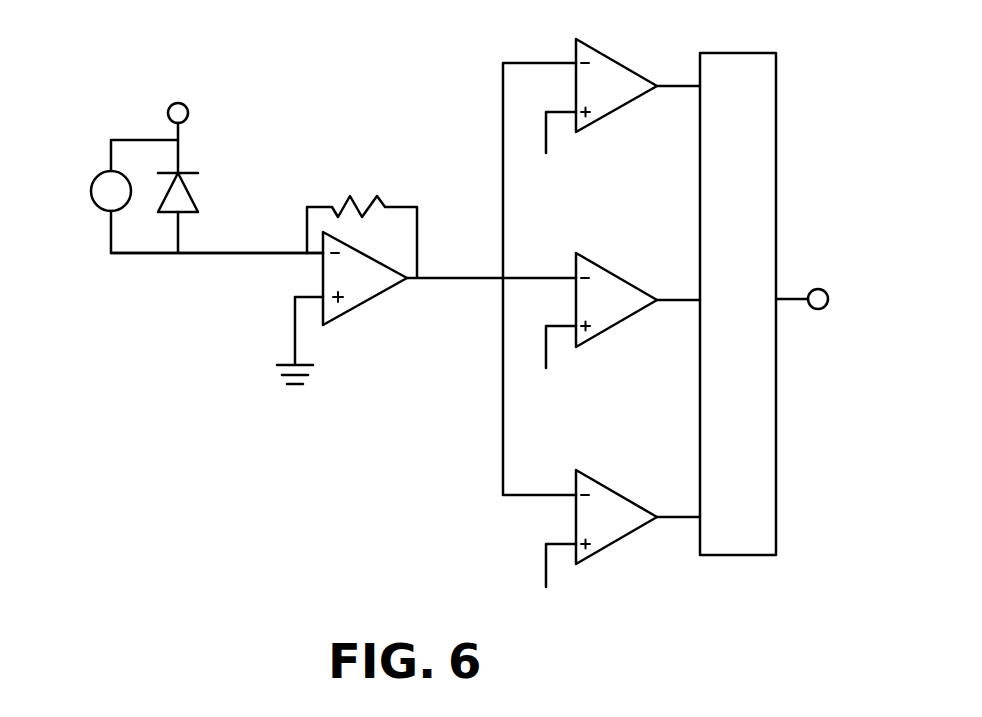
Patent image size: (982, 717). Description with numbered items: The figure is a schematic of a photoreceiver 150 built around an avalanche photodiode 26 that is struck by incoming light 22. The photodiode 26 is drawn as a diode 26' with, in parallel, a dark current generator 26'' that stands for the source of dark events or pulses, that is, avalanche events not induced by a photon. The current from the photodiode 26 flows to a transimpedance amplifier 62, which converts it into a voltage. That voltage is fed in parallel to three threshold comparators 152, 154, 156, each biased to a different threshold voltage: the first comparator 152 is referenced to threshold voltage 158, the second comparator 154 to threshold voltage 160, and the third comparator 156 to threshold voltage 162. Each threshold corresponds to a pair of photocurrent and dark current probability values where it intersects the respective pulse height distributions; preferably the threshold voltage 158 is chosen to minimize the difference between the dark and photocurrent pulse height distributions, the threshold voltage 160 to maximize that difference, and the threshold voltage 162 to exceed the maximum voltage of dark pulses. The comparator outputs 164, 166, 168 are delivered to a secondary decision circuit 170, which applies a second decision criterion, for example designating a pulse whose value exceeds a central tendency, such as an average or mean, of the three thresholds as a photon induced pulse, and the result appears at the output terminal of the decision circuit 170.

The light 22 is at (243, 157).
The photodiode 26 is at (179, 177).
The diode 26' is at (205, 205).
The dark current generator 26'' is at (83, 199).
The photoreceiver 150 is at (171, 298).
The transimpedance amplifier 62 is at (377, 295).
The threshold comparator 152 is at (592, 43).
The threshold comparator 154 is at (602, 263).
The threshold comparator 156 is at (605, 482).
The threshold voltage v_thn 158 is at (572, 167).
The threshold voltage v_thn+1 160 is at (568, 382).
The threshold voltage v_thn+2 162 is at (568, 602).
The threshold comparator output 164 is at (683, 80).
The threshold comparator output 166 is at (680, 297).
The threshold comparator output 168 is at (683, 517).
The secondary decision circuit 170 is at (777, 168).